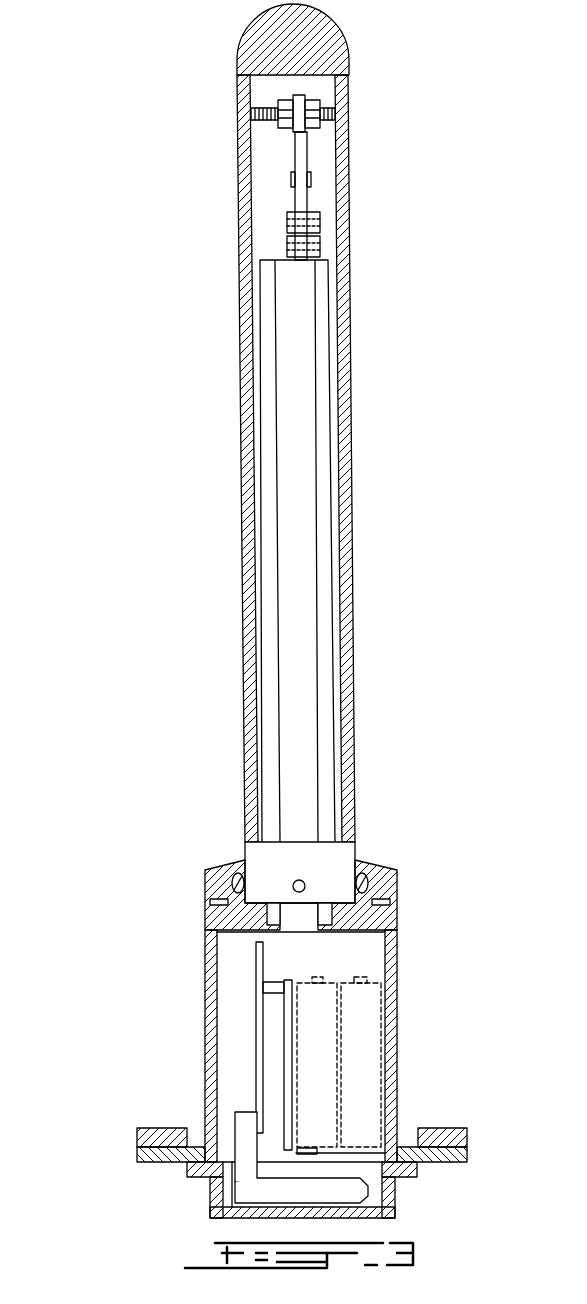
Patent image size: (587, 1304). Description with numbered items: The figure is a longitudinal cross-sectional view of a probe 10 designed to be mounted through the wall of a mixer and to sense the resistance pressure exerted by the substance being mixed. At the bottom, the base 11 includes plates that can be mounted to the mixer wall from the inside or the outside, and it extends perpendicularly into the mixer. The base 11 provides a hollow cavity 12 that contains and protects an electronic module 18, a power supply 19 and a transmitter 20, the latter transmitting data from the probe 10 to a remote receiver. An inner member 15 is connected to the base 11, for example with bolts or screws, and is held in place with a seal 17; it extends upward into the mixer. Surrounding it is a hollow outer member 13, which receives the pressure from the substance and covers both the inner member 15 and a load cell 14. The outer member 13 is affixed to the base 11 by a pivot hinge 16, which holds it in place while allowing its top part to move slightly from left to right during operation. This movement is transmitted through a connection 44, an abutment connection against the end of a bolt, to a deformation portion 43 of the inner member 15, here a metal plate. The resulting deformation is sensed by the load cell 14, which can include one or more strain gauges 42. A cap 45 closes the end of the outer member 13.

The probe 10 is at (112, 241).
The base 11 is at (195, 1063).
The hollow cavity 12 is at (350, 970).
The outer member 13 is at (362, 87).
The load cell 14 is at (329, 172).
The inner member 15 is at (250, 460).
The pivot hinge 16 is at (322, 885).
The seal 17 is at (213, 882).
The electronic module 18 is at (244, 1008).
The power supply 19 is at (374, 1053).
The transmitter 20 is at (240, 1217).
The strain gauges 42 is at (307, 185).
The deformation portion 43 is at (307, 152).
The connection 44 is at (245, 106).
The cap 45 is at (327, 14).